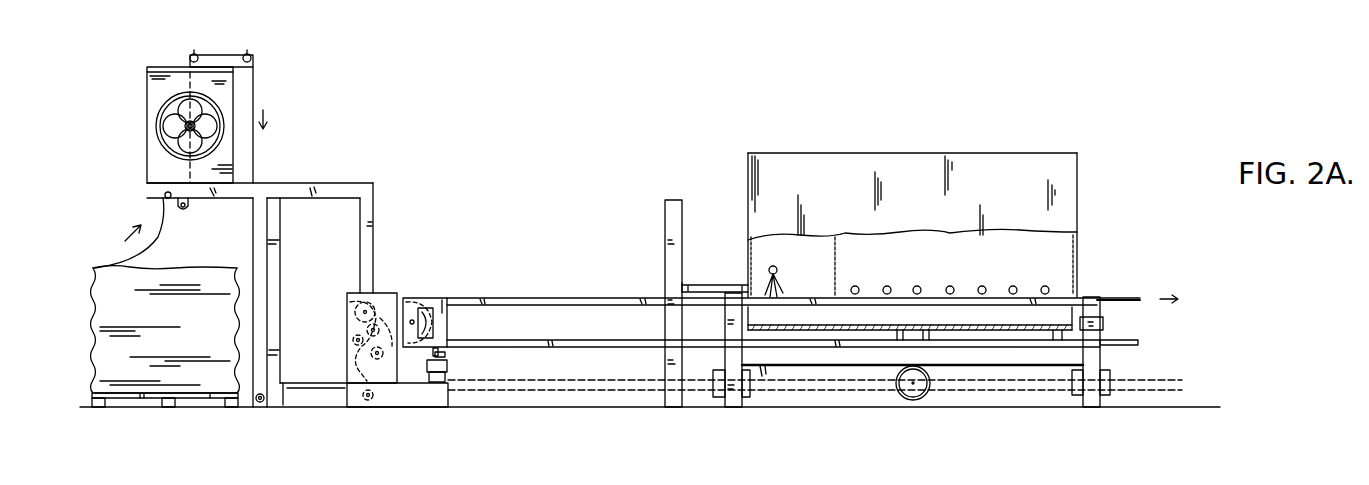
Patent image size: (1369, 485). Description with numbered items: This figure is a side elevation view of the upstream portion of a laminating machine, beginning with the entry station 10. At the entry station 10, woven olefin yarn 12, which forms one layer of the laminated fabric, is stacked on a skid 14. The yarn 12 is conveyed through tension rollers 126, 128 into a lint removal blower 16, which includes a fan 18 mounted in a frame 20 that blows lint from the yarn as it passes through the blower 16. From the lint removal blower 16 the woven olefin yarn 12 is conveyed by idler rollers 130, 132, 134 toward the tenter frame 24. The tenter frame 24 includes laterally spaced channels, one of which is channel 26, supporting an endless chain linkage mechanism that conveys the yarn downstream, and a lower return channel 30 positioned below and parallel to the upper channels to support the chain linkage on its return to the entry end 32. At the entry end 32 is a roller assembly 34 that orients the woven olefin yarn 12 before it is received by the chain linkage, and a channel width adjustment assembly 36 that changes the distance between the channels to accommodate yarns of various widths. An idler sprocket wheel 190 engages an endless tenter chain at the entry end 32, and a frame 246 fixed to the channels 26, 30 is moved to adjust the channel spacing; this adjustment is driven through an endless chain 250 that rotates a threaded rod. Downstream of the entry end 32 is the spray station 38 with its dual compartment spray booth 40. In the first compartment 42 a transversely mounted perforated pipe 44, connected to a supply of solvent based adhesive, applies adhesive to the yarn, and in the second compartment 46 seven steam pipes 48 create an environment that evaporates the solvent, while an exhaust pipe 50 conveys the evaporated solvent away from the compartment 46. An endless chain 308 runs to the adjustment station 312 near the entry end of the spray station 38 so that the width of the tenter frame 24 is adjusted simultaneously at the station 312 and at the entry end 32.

The entry station 10 is at (546, 193).
The woven olefin yarn 12 is at (160, 238).
The skid 14 is at (217, 396).
The lint removal blower 16 is at (153, 85).
The fan 18 is at (167, 120).
The frame 20 is at (303, 186).
The tenter frame 24 is at (576, 296).
The channel 26 is at (520, 298).
The return channel 30 is at (578, 342).
The entry end 32 is at (428, 291).
The roller assembly 34 is at (389, 289).
The channel width adjustment assembly 36 is at (458, 366).
The spray station 38 is at (980, 164).
The dual compartment spray booth 40 is at (848, 158).
The first compartment 42 is at (766, 245).
The perforated pipe 44 is at (777, 267).
The second compartment 46 is at (1062, 252).
The steam pipes 48 is at (982, 286).
The exhaust pipe 50 is at (918, 398).
The tension roller 126 is at (164, 195).
The tension roller 128 is at (188, 207).
The idler roller 130 is at (195, 53).
The idler roller 132 is at (251, 58).
The idler roller 134 is at (259, 403).
The idler sprocket wheel 190 is at (428, 327).
The frame 246 is at (442, 300).
The endless chain 250 is at (570, 396).
The endless chain 308 is at (1168, 378).
The adjustment station 312 is at (1113, 324).